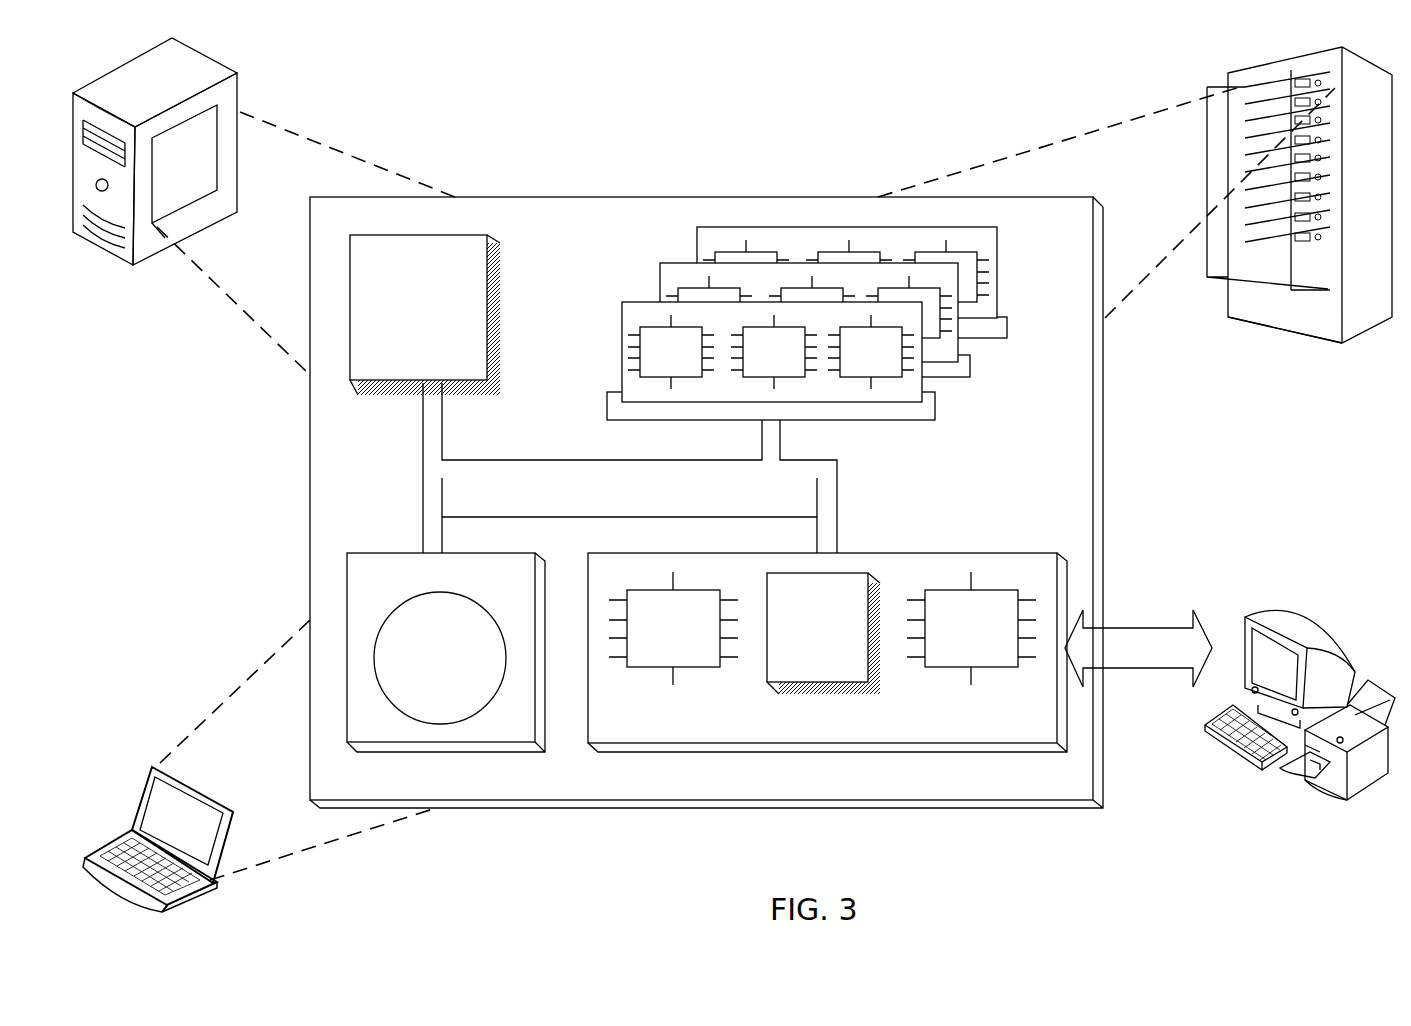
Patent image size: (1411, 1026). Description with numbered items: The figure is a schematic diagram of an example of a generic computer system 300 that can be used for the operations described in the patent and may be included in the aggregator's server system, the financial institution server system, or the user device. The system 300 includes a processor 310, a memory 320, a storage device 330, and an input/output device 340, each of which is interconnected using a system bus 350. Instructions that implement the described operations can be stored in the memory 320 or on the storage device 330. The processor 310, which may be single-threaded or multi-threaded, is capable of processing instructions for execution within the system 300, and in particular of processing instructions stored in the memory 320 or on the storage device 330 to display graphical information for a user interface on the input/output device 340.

The generic computer system 300 is at (512, 60).
The processor 310 is at (467, 368).
The memory 320 is at (1005, 376).
The storage device 330 is at (525, 736).
The input/output device 340 is at (1246, 612).
The system bus 350 is at (970, 752).